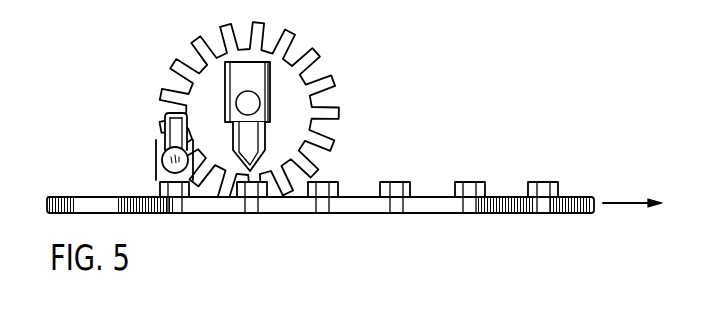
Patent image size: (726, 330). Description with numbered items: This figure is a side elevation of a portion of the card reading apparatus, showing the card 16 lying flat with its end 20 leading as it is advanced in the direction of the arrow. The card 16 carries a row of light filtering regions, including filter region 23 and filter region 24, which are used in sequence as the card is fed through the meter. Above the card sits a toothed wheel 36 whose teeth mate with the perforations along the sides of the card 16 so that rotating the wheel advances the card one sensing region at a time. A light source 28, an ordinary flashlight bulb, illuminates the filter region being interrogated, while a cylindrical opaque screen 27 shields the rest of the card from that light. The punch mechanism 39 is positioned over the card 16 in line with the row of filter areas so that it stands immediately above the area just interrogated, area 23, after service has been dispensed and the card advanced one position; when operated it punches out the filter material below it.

The card 16 is at (336, 197).
The end 20 is at (355, 207).
The light filter region 23 is at (253, 192).
The light filter region 24 is at (173, 192).
The cylindrical opaque screen 27 is at (156, 163).
The light source 28 is at (163, 132).
The toothed wheel 36 is at (302, 93).
The punch mechanism 39 is at (260, 80).